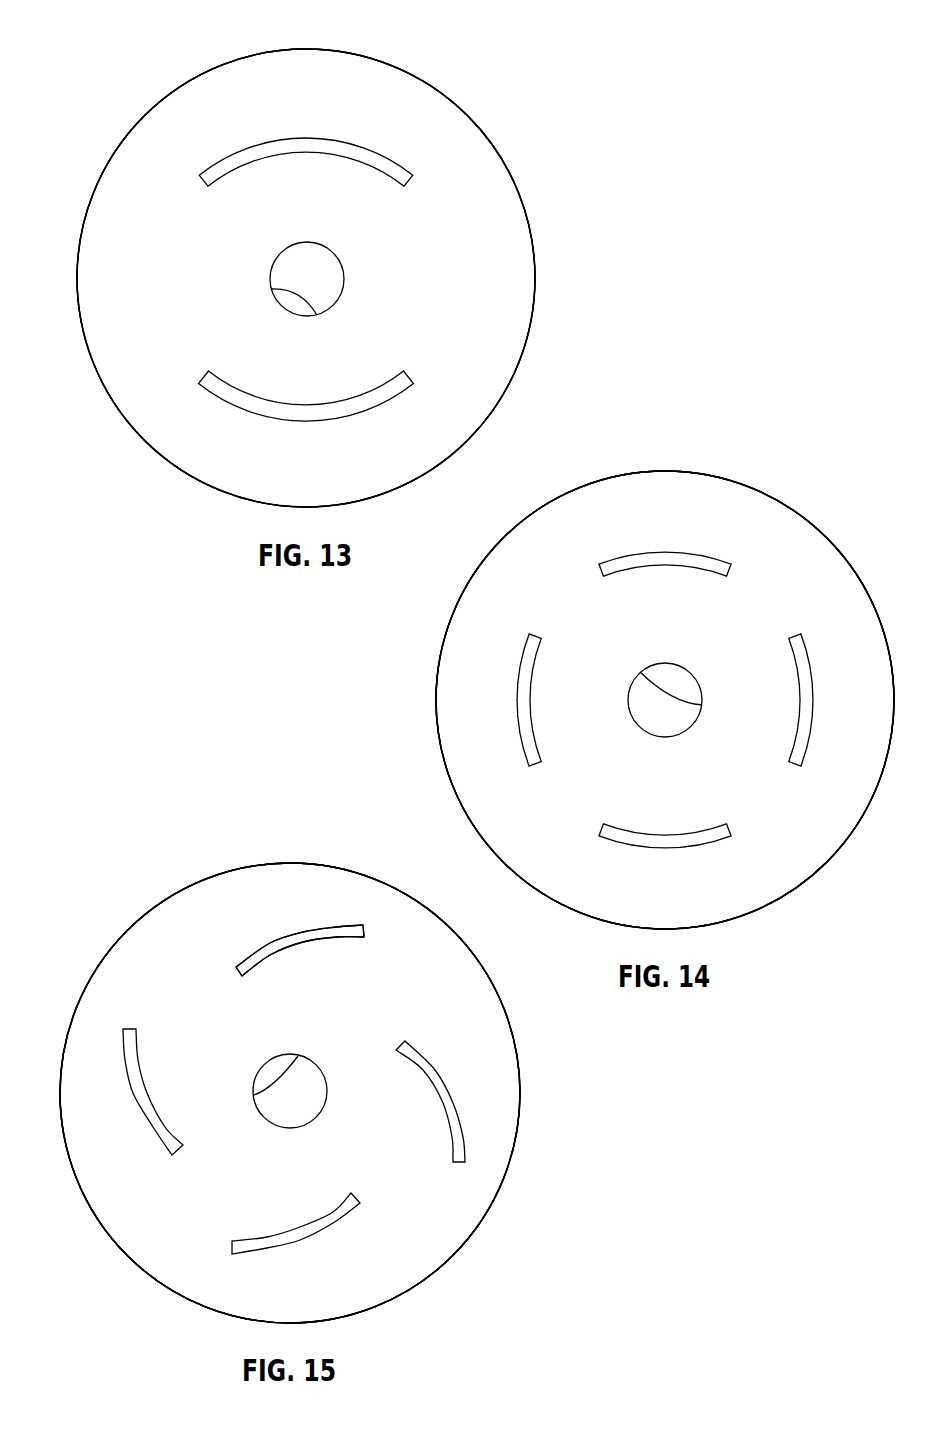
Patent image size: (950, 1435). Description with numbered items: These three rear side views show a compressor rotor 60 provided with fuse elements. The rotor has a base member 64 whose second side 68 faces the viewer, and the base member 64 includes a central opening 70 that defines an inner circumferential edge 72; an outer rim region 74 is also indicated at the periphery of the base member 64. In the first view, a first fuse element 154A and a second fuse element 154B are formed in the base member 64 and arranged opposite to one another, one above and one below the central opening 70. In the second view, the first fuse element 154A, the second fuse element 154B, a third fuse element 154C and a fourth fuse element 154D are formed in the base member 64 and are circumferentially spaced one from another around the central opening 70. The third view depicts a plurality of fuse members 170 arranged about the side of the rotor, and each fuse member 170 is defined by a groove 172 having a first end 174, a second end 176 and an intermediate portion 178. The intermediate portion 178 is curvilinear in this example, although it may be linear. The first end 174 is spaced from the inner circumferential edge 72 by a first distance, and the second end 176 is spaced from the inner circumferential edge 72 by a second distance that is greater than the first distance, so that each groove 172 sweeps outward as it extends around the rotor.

In FIG. 14, the compressor rotor 60 is at (849, 531).
In FIG. 15, the compressor rotor 60 is at (424, 1290).
In FIG. 13, the base member 64 is at (129, 125).
In FIG. 14, the base member 64 is at (861, 576).
In FIG. 15, the base member 64 is at (144, 910).
In FIG. 13, the second side 68 is at (159, 439).
In FIG. 14, the second side 68 is at (498, 558).
In FIG. 15, the second side 68 is at (431, 941).
In FIG. 13, the central opening 70 is at (321, 279).
In FIG. 14, the central opening 70 is at (660, 718).
In FIG. 15, the central opening 70 is at (295, 1108).
In FIG. 13, the inner circumferential edge 72 is at (317, 315).
In FIG. 14, the inner circumferential edge 72 is at (640, 672).
In FIG. 15, the inner circumferential edge 72 is at (298, 1056).
In FIG. 13, the outer rim 74 is at (111, 408).
In FIG. 14, the outer rim 74 is at (507, 530).
In FIG. 15, the outer rim 74 is at (502, 1172).
In FIG. 13, the first fuse element 154A is at (273, 83).
In FIG. 14, the first fuse element 154A is at (608, 841).
In FIG. 13, the second fuse element 154B is at (394, 451).
In FIG. 14, the second fuse element 154B is at (824, 725).
In FIG. 14, the third fuse element 154C is at (620, 537).
In FIG. 14, the fourth fuse element 154D is at (512, 693).
In FIG. 15, the fuse member 170 is at (271, 917).
In FIG. 15, the groove 172 is at (335, 914).
In FIG. 15, the first end 174 is at (235, 979).
In FIG. 15, the second end 176 is at (366, 934).
In FIG. 15, the intermediate portion 178 is at (325, 940).